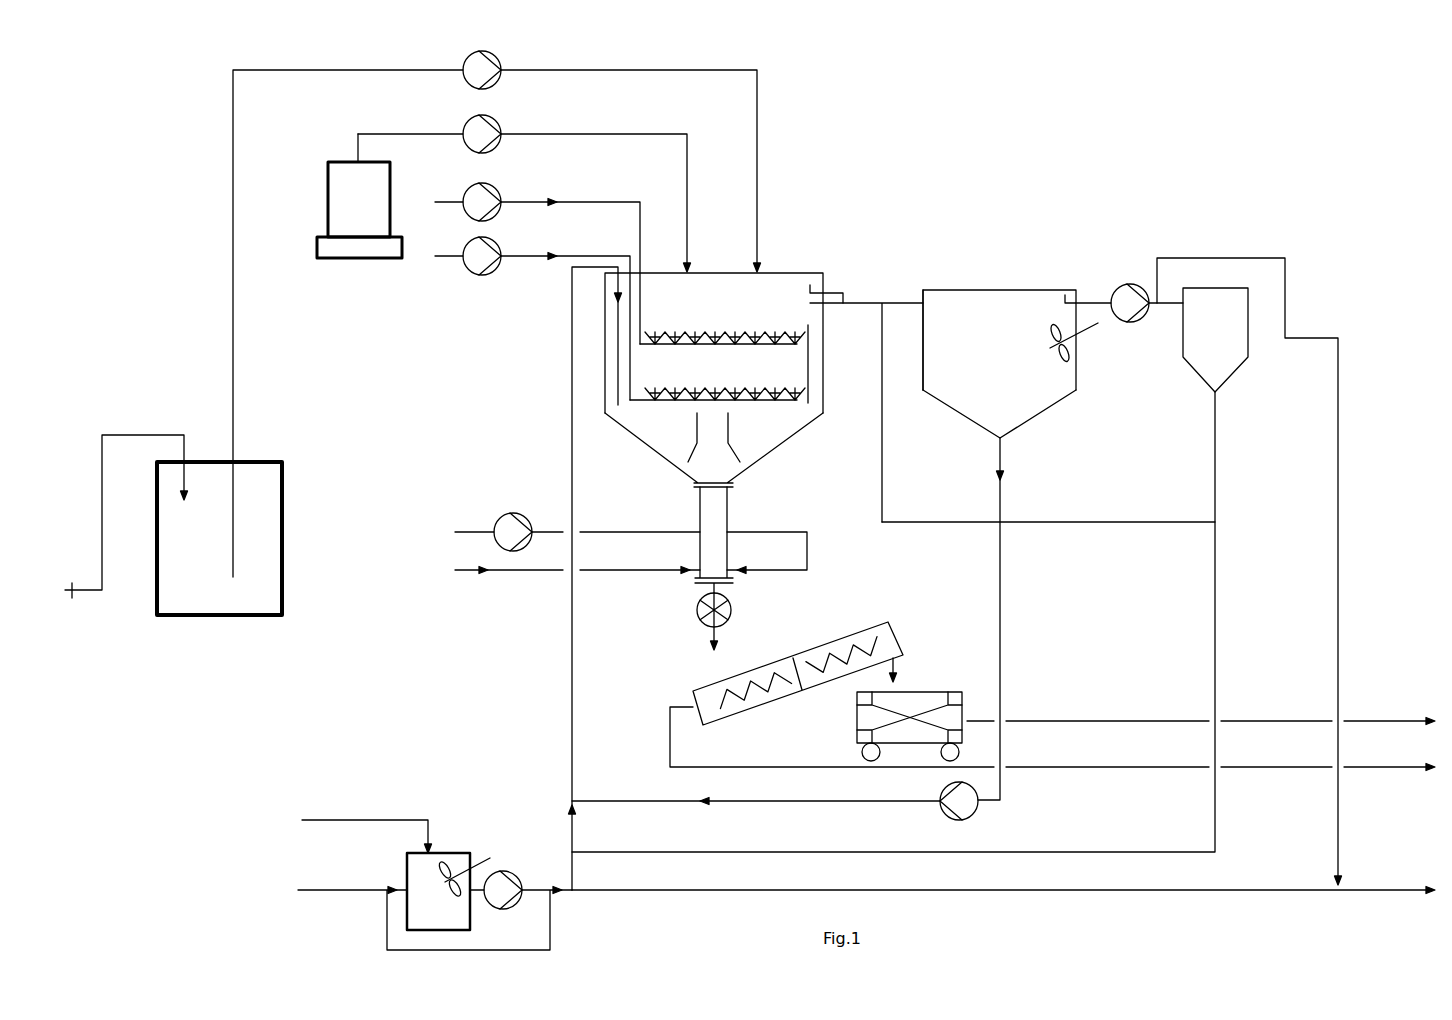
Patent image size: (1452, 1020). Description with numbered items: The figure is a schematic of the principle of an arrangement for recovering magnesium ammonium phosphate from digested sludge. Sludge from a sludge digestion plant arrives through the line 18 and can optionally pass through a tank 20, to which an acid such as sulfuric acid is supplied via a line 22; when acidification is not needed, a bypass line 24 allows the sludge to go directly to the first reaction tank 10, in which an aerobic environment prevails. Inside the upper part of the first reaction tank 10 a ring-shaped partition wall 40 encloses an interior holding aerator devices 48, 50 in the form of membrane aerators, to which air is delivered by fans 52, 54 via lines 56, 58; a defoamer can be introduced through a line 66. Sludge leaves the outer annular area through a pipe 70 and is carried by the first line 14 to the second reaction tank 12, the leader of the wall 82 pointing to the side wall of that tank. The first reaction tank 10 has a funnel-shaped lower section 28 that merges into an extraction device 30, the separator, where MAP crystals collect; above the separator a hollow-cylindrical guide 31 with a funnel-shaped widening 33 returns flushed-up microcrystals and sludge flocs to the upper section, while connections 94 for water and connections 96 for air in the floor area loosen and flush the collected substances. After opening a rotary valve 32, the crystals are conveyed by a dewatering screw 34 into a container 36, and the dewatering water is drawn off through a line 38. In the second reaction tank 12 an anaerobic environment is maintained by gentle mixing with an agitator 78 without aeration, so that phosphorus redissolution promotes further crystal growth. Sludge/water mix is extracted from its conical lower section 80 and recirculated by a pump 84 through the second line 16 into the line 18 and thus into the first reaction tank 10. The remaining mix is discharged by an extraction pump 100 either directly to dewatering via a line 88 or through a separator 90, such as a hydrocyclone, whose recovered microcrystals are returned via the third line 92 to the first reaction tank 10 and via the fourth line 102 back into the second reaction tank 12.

The first reaction tank 10 is at (825, 408).
The second reaction tank 12 is at (948, 408).
The first line 14 is at (886, 302).
The second line 16 is at (1002, 560).
The line 18 is at (572, 647).
The tank 20 is at (413, 865).
The line 22 is at (380, 820).
The bypass line 24 is at (552, 915).
The funnel-shaped lower section 28 is at (753, 468).
The extraction device 30 is at (705, 513).
The guide 31 is at (732, 424).
The rotary valve 32 is at (707, 623).
The funnel-shaped widening 33 is at (690, 454).
The dewatering screw 34 is at (790, 683).
The container 36 is at (918, 695).
The line 38 is at (1028, 768).
The partition wall 40 is at (810, 338).
The aerator device 48 is at (628, 395).
The aerator device 50 is at (638, 339).
The fan 52 is at (473, 258).
The fan 54 is at (484, 203).
The line 56 is at (523, 258).
The line 58 is at (592, 200).
The line 66 is at (606, 133).
The pipe 70 is at (816, 303).
The agitator 78 is at (1087, 333).
The lower section 80 is at (1040, 415).
The tank wall 82 is at (922, 345).
The pump 84 is at (973, 809).
The line 88 is at (1286, 284).
The separator 90 is at (1193, 367).
The third line 92 is at (1216, 637).
The connection 94 is at (582, 572).
The connection 96 is at (597, 533).
The extraction pump 100 is at (1123, 283).
The fourth line 102 is at (1109, 521).